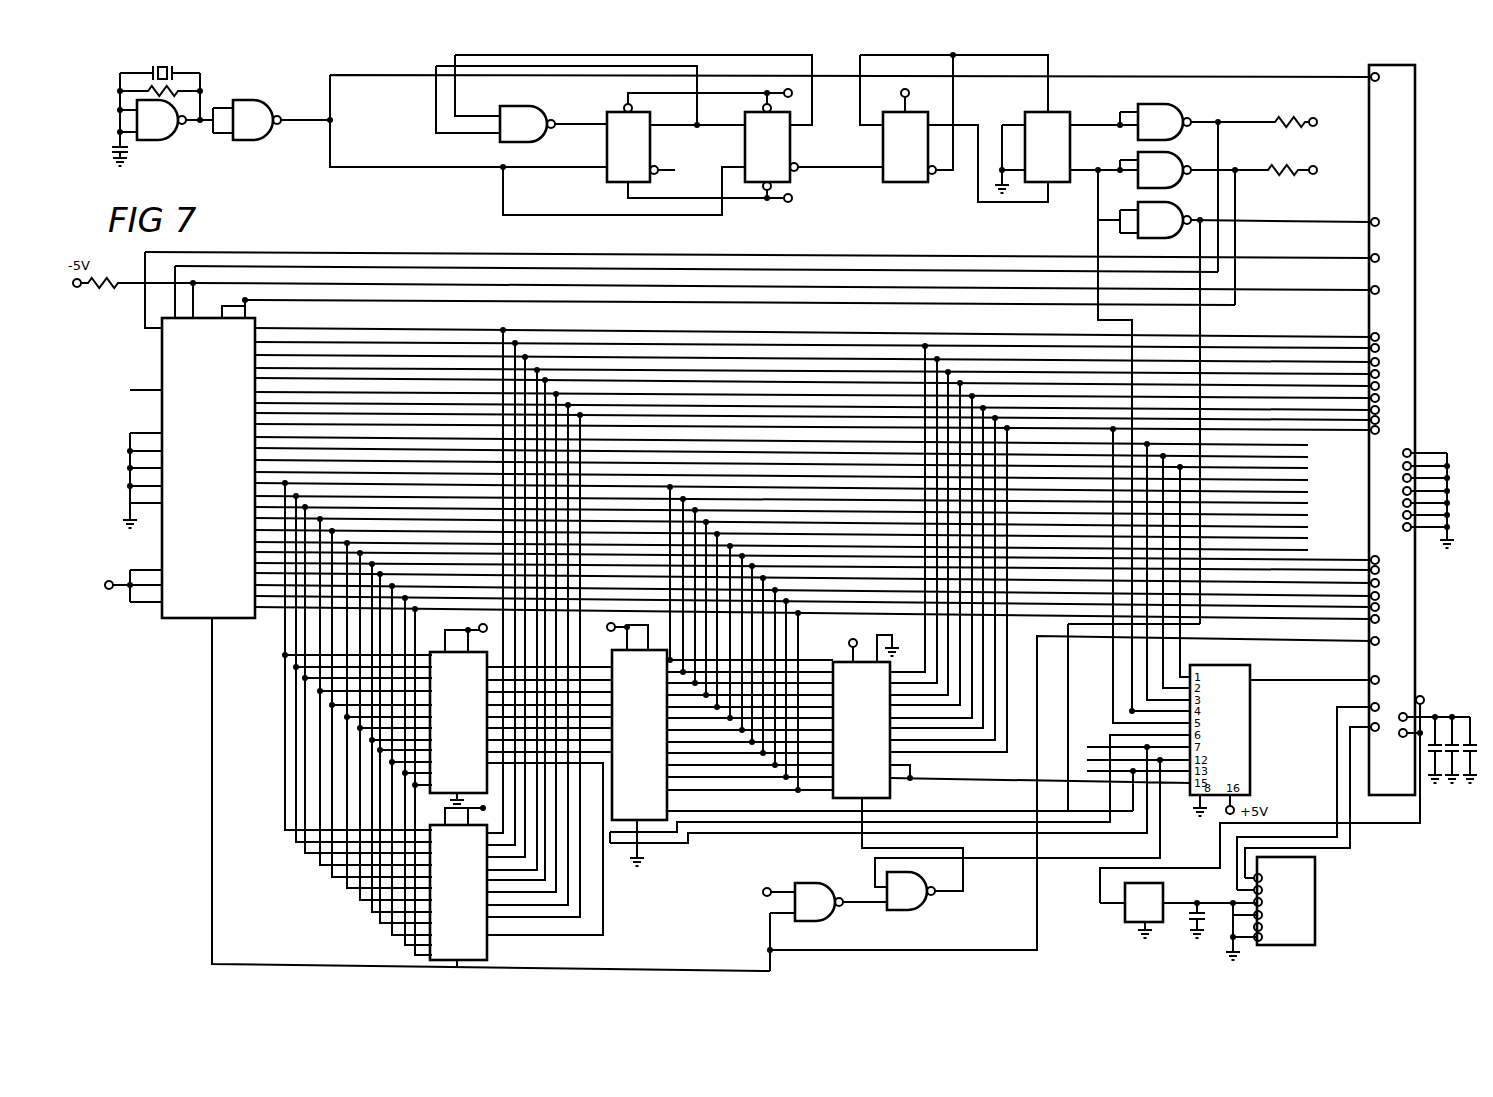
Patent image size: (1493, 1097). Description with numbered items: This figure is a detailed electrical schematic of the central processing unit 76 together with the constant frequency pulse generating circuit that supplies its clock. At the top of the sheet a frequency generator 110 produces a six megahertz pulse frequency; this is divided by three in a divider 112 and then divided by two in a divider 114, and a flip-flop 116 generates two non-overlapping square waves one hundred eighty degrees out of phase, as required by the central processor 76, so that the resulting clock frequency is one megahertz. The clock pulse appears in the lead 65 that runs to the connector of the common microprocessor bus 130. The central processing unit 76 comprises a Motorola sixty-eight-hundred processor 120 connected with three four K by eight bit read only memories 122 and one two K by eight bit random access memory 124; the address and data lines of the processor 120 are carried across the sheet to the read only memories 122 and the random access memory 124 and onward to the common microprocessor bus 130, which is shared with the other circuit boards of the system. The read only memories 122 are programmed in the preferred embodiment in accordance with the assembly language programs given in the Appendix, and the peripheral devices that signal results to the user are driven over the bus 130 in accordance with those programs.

The frequency generator 110 is at (214, 185).
The divider 112 is at (710, 166).
The divider 114 is at (887, 184).
The flip-flop 116 is at (1068, 112).
The lead 65 is at (1307, 220).
The processor 120 is at (177, 620).
The read only memories 122 is at (426, 652).
The random access memory 124 is at (866, 740).
The common microprocessor bus 130 is at (1363, 430).
The central processing unit 76 is at (200, 768).